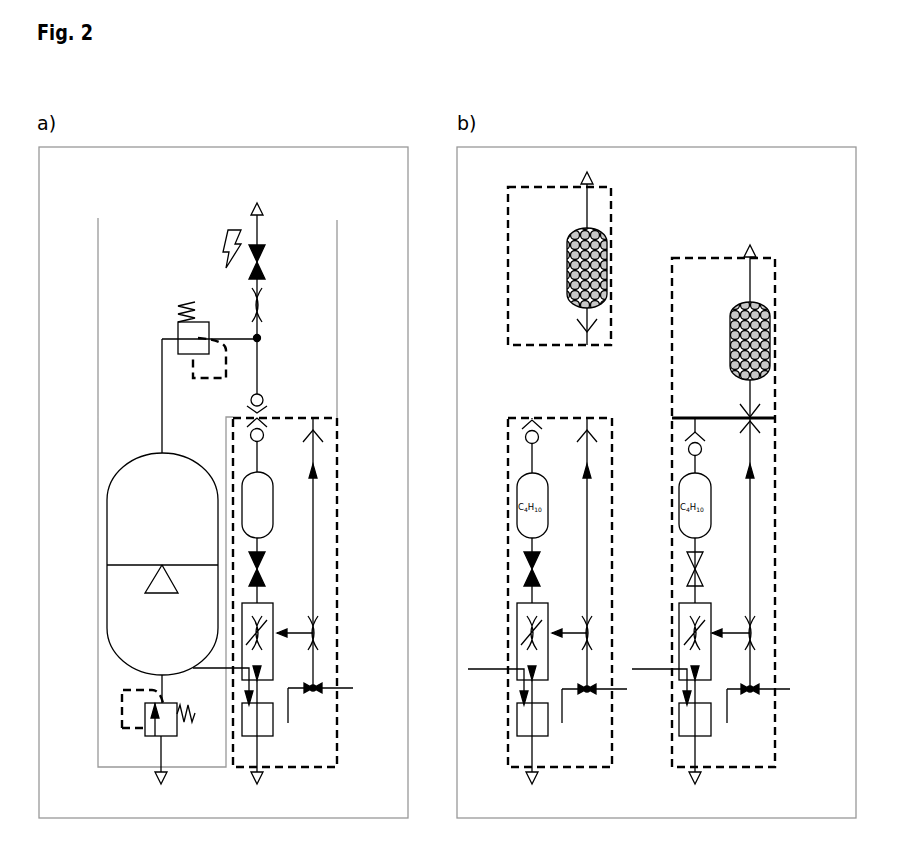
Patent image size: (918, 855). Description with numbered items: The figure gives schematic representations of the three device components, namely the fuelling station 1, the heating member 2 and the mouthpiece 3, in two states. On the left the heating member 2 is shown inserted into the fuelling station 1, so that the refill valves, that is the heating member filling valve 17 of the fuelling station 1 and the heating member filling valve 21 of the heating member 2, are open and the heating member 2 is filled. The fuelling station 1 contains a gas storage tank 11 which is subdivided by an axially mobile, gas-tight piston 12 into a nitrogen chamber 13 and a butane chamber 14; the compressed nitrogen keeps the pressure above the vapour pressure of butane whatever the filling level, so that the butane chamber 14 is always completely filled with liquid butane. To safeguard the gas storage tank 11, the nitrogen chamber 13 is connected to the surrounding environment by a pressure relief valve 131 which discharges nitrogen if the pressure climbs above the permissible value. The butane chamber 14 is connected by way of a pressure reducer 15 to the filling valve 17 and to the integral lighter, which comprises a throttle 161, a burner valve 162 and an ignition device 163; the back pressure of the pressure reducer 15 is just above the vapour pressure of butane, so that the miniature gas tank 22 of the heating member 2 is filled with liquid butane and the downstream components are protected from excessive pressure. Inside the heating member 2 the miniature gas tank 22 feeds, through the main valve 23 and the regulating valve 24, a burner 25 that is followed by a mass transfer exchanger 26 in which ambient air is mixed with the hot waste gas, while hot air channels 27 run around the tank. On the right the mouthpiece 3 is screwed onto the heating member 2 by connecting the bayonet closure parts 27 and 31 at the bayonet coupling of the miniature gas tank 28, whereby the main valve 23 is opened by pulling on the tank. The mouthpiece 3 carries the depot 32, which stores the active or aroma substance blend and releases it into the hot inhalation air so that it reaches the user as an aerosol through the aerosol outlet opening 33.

The fuelling station 1 is at (196, 506).
The heating member 2 is at (452, 607).
The mouthpiece 3 is at (641, 477).
The gas storage tank 11 is at (137, 564).
The piston 12 is at (137, 590).
The nitrogen chamber 13 is at (114, 649).
The butane chamber 14 is at (121, 504).
The pressure reducer 15 is at (141, 340).
The heating member filling valve 17 is at (313, 357).
The heating member filling valve 21 is at (394, 403).
The miniature gas tank 22 is at (311, 505).
The main valve 23 is at (532, 563).
The regulating valve 24 is at (311, 640).
The burner 25 is at (311, 720).
The mass transfer exchanger 26 is at (342, 676).
The hot air channels 27 is at (781, 485).
The bayonet coupling of the miniature gas tank 28 is at (559, 433).
The bayonet closure part 31 is at (645, 359).
The depot 32 is at (540, 268).
The aerosol outlet opening 33 is at (780, 241).
The pressure relief valve 131 is at (126, 714).
The throttle 161 is at (316, 281).
The burner valve 162 is at (314, 229).
The ignition device 163 is at (149, 249).